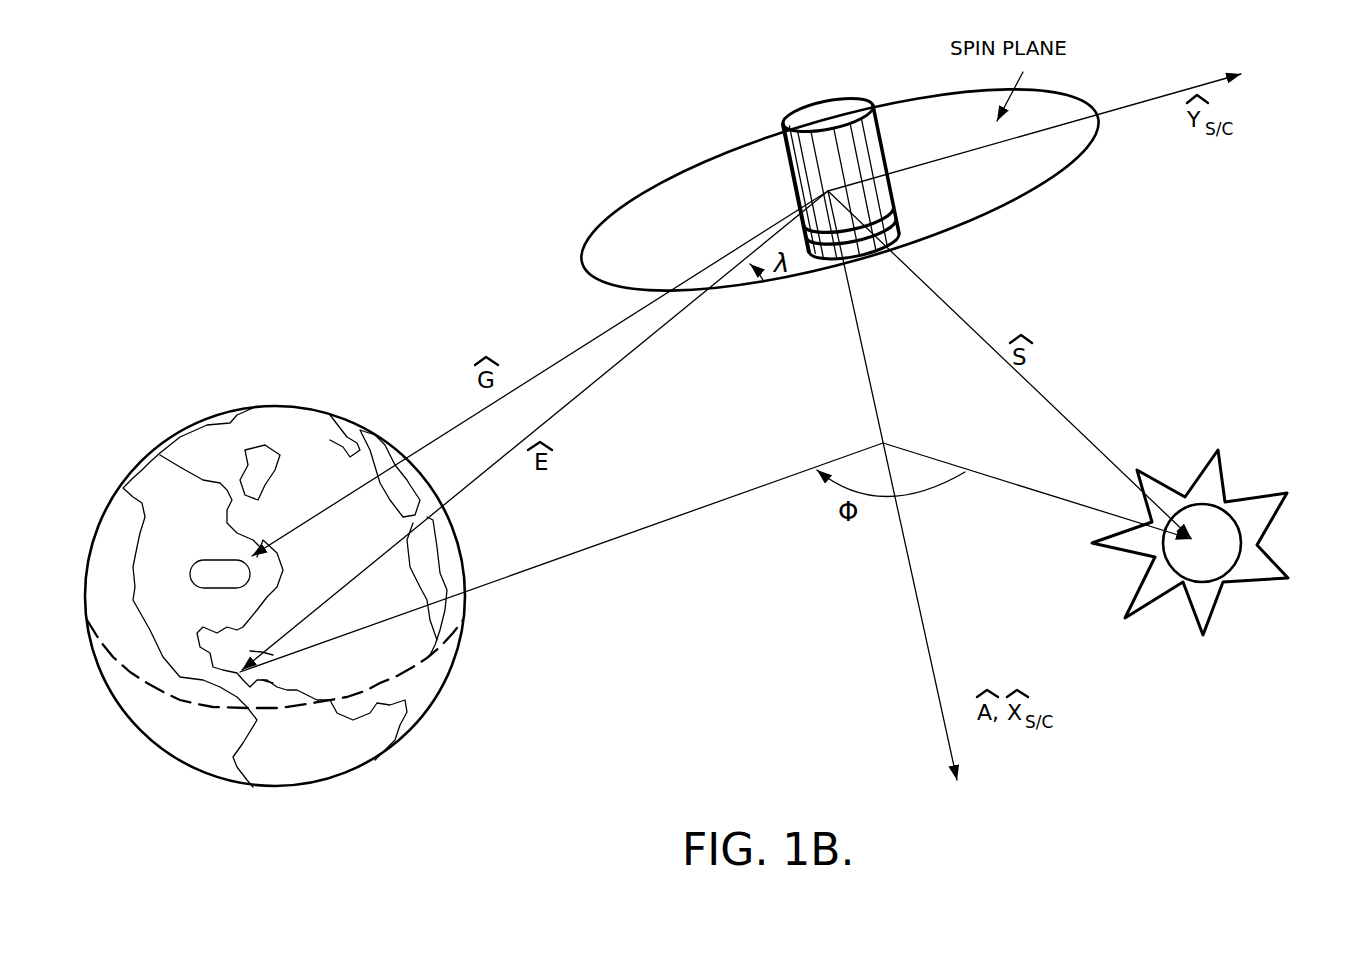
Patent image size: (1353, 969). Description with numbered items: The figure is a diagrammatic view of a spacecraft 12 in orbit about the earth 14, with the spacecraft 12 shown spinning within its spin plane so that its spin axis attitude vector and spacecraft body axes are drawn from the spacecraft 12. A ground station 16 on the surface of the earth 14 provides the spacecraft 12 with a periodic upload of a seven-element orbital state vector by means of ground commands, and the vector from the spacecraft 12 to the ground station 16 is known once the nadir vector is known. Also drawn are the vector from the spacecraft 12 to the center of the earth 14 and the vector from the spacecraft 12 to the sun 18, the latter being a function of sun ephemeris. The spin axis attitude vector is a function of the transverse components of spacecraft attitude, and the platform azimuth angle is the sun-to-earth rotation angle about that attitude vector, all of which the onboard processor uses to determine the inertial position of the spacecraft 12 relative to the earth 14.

The spacecraft 12 is at (820, 113).
The earth 14 is at (437, 700).
The ground station 16 is at (217, 560).
The sun 18 is at (1273, 558).